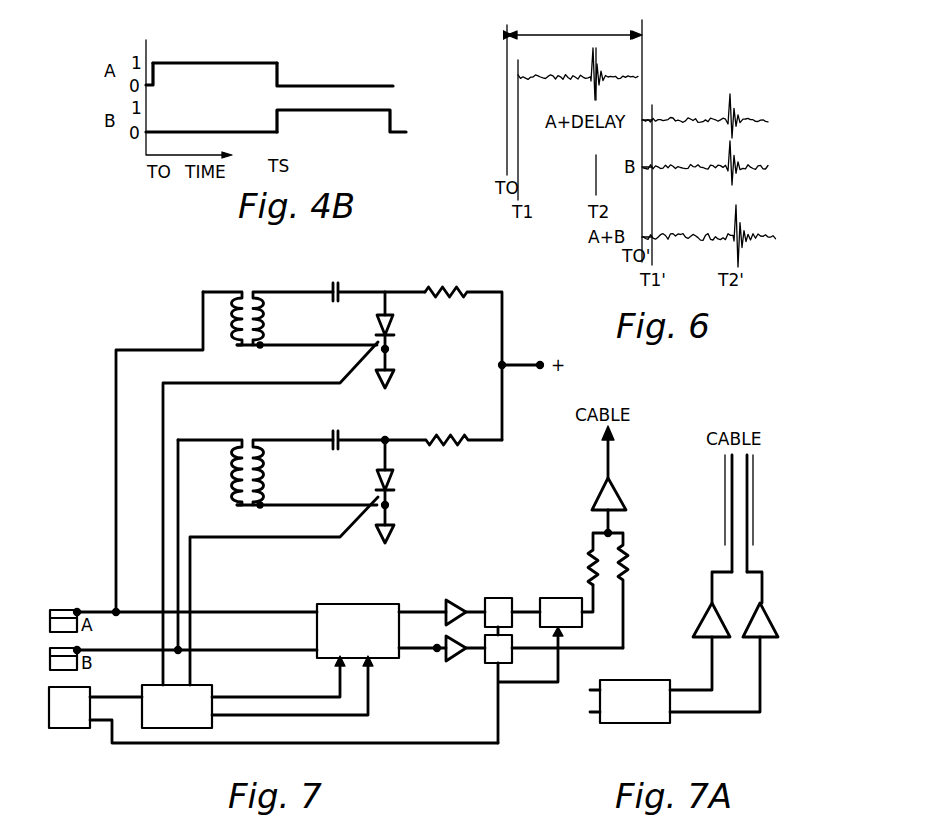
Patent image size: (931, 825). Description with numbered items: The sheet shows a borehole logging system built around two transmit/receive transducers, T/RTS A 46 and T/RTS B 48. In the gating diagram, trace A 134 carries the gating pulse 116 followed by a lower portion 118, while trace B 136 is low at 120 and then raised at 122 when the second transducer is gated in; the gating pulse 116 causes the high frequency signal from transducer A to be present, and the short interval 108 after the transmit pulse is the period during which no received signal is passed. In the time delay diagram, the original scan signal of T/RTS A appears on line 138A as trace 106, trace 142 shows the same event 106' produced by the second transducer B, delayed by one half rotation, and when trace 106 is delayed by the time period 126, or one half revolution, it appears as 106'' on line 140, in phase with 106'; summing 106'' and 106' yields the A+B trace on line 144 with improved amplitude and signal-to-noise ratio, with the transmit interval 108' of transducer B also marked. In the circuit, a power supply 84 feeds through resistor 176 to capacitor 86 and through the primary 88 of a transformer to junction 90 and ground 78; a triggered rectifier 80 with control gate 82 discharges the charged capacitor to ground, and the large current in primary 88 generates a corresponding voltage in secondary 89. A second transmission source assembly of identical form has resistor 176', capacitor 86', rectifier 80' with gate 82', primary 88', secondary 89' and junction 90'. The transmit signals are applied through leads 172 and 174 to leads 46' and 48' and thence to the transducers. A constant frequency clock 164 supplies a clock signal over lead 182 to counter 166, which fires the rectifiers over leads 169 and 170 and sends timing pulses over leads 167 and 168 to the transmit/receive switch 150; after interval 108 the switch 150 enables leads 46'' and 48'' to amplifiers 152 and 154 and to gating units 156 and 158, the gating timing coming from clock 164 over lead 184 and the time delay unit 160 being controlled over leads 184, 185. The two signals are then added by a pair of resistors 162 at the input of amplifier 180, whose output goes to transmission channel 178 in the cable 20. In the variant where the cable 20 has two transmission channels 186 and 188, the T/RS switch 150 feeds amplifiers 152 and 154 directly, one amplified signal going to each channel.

In FIG. 7A, the cable 20 is at (754, 508).
In FIG. 7, the T/RTS A 46 is at (73, 606).
In FIG. 7, the lead 46' is at (197, 596).
In FIG. 7, the lead 46'' is at (406, 595).
In FIG. 7, the T/RTS B 48 is at (90, 667).
In FIG. 7, the lead 48' is at (197, 636).
In FIG. 7, the lead 48'' is at (412, 665).
In FIG. 7, the ground 78 is at (395, 384).
In FIG. 7, the triggered rectifier 80 is at (408, 331).
In FIG. 7, the silicon controlled rectifier 80' is at (409, 481).
In FIG. 7, the control gate 82 is at (270, 504).
In FIG. 7, the control gate 82' is at (284, 582).
In FIG. 7, the power supply 84 is at (541, 362).
In FIG. 7, the capacitor 86 is at (379, 281).
In FIG. 7, the capacitor 86' is at (379, 427).
In FIG. 7, the primary 88 is at (293, 306).
In FIG. 7, the secondary winding 88' is at (293, 460).
In FIG. 7, the secondary 89 is at (218, 306).
In FIG. 7, the primary winding 89' is at (210, 460).
In FIG. 7, the junction 90 is at (307, 354).
In FIG. 7, the winding junction 90' is at (307, 515).
In FIG. 6, the trace 106 is at (561, 57).
In FIG. 6, the trace 106' is at (703, 147).
In FIG. 6, the delayed trace 106'' is at (696, 92).
In FIG. 4B, the time interval 108 is at (173, 90).
In FIG. 6, the time interval 108 is at (539, 157).
In FIG. 6, the transmit pulse 108' is at (676, 198).
In FIG. 4B, the gating pulse 116 is at (225, 63).
In FIG. 4B, the signal A low level 118 is at (314, 86).
In FIG. 4B, the signal B low level 120 is at (210, 132).
In FIG. 4B, the signal B high level 122 is at (300, 112).
In FIG. 6, the time period 126 is at (537, 33).
In FIG. 4B, the trace A 134 is at (74, 87).
In FIG. 4B, the trace B 136 is at (78, 144).
In FIG. 6, the line 138A is at (543, 74).
In FIG. 6, the line 140 is at (612, 116).
In FIG. 6, the trace 142 is at (612, 163).
In FIG. 6, the line 144 is at (616, 236).
In FIG. 7, the transmit/receive switch 150 is at (345, 604).
In FIG. 7A, the transmit/receive switch 150 is at (640, 724).
In FIG. 7, the amplifier 152 is at (453, 600).
In FIG. 7A, the amplifier 152 is at (700, 643).
In FIG. 7, the amplifier 154 is at (455, 659).
In FIG. 7A, the amplifier 154 is at (754, 643).
In FIG. 7, the gating means 156 is at (500, 598).
In FIG. 7, the gating unit 158 is at (502, 665).
In FIG. 7, the time delay unit 160 is at (559, 598).
In FIG. 7, the pair of resistors 162 is at (622, 562).
In FIG. 7, the clock 164 is at (76, 730).
In FIG. 7, the counter 166 is at (200, 685).
In FIG. 7, the lead 167 is at (338, 694).
In FIG. 7, the lead 168 is at (368, 708).
In FIG. 7, the lead 169 is at (245, 383).
In FIG. 7, the lead 170 is at (245, 537).
In FIG. 7, the lead 172 is at (115, 385).
In FIG. 7, the lead 174 is at (180, 492).
In FIG. 7, the resistor 176 is at (463, 363).
In FIG. 7, the resistor 176' is at (464, 427).
In FIG. 7, the transmission channel 178 is at (605, 466).
In FIG. 7, the amplifier 180 is at (597, 490).
In FIG. 7, the lead 182 is at (112, 712).
In FIG. 7, the lead 184 is at (501, 740).
In FIG. 7, the lead 185 is at (510, 632).
In FIG. 7A, the transmission channel 186 is at (712, 592).
In FIG. 7A, the transmission channel 188 is at (762, 582).